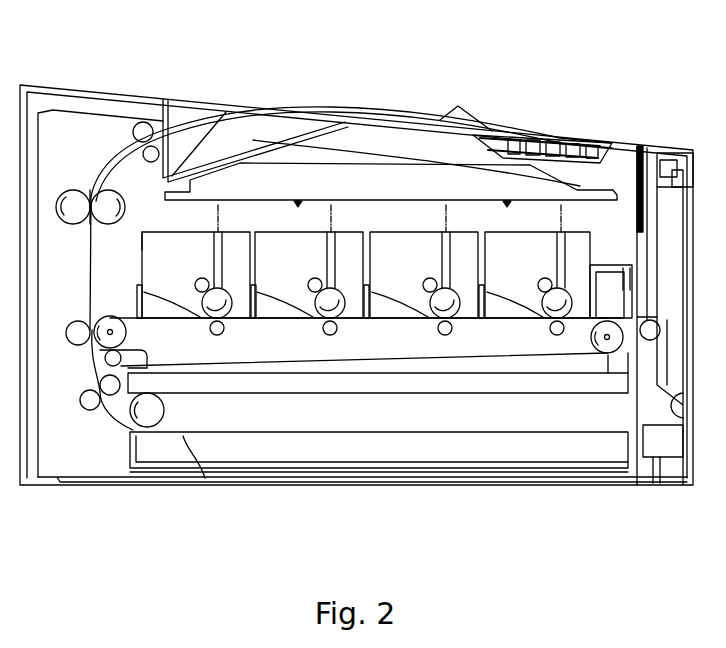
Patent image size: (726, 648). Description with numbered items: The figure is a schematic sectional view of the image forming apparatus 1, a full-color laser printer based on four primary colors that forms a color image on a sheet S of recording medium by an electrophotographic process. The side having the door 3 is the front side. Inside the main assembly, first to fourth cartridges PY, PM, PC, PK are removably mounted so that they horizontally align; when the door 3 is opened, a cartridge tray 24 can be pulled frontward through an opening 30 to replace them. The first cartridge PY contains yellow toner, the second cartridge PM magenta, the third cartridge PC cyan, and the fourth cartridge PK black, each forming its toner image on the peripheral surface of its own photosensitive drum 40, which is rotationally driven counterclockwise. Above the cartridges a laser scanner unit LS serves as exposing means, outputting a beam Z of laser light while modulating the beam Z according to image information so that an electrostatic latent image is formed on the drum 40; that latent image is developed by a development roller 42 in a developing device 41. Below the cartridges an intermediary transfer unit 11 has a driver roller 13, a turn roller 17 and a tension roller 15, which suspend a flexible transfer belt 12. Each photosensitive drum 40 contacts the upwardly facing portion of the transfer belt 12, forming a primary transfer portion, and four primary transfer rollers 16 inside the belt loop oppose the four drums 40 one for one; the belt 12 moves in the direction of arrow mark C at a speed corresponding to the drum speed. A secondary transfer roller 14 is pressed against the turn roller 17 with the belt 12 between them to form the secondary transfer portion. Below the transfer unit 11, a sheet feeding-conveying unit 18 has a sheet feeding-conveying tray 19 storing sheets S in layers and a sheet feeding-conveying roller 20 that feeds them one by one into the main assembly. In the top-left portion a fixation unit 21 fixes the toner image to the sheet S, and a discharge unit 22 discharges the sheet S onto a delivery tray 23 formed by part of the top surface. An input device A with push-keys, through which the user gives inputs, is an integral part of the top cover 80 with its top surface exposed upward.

The image forming apparatus 1 is at (606, 90).
The door 3 is at (685, 152).
The intermediary transfer unit 11 is at (462, 372).
The transfer belt 12 is at (374, 366).
The driver roller 13 is at (602, 354).
The secondary transfer roller 14 is at (76, 320).
The tension roller 15 is at (97, 376).
The primary transfer roller 16 is at (224, 335).
The turn roller 17 is at (108, 312).
The sheet feeding-conveying unit 18 is at (114, 430).
The sheet feeding-conveying tray 19 is at (508, 478).
The sheet feeding-conveying roller 20 is at (166, 402).
The fixation unit 21 is at (82, 183).
The discharge unit 22 is at (136, 124).
The delivery tray 23 is at (253, 140).
The cartridge tray 24 is at (600, 264).
The opening 30 is at (637, 212).
The photosensitive drum 40 is at (196, 298).
The developing device 41 is at (163, 232).
The development roller 42 is at (202, 278).
The top cover 80 is at (430, 118).
The input device A is at (521, 118).
The arrow mark C is at (220, 361).
The laser scanner unit LS is at (393, 173).
The first cartridge PY is at (208, 210).
The second cartridge PM is at (320, 210).
The third cartridge PC is at (434, 210).
The fourth cartridge PK is at (546, 210).
The sheet S is at (206, 478).
The beam of laser light Z is at (221, 226).